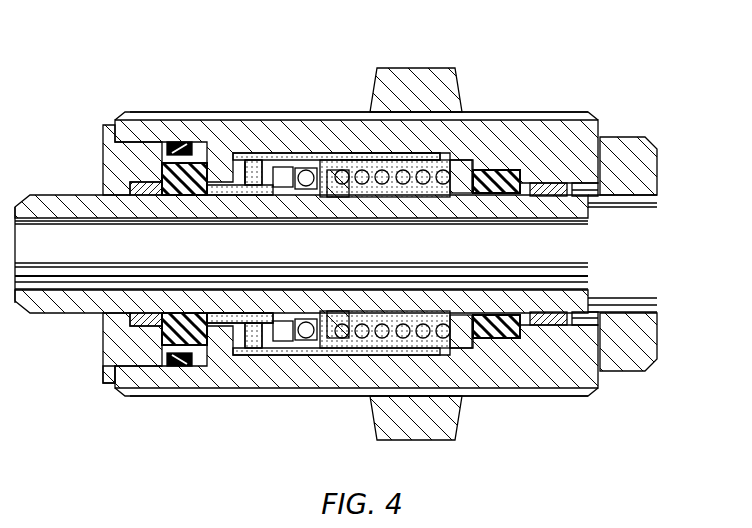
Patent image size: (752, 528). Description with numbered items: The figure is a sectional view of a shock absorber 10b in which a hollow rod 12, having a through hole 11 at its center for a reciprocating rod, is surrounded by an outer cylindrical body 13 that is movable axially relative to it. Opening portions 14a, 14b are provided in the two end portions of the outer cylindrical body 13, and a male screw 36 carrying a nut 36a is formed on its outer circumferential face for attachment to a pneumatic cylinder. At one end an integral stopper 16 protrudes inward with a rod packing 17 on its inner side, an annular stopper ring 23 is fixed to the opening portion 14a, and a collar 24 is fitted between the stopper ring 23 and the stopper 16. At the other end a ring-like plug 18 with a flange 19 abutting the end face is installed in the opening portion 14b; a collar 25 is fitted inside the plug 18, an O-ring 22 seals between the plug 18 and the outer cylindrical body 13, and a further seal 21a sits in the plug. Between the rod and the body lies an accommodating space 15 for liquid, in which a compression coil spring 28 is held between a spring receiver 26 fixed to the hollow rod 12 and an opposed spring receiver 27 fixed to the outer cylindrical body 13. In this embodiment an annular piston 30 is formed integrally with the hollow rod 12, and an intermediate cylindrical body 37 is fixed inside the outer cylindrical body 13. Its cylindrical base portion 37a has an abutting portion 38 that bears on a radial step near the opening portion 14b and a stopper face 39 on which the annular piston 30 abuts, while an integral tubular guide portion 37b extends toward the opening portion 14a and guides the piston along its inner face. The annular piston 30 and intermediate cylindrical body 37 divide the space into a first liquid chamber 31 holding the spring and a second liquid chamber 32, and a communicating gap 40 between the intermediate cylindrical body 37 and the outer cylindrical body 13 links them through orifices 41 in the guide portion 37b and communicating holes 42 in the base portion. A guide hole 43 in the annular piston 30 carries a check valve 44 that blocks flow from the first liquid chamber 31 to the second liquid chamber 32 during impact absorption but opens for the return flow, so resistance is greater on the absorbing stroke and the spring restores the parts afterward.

The shock absorber 10b is at (645, 62).
The through hole 11 is at (48, 222).
The hollow rod 12 is at (30, 302).
The outer cylindrical body 13 is at (553, 388).
The opening portion 14a is at (577, 324).
The opening portion 14b is at (142, 366).
The accommodating space 15 is at (407, 318).
The stopper 16 is at (530, 180).
The rod packing 17 is at (500, 170).
The plug 18 is at (143, 156).
The flange 19 is at (104, 125).
The seal member 21a is at (180, 197).
The O-ring 22 is at (176, 142).
The stopper ring 23 is at (637, 143).
The collar 24 is at (550, 183).
The collar 25 is at (130, 186).
The spring receiver 26 is at (330, 372).
The spring receiver 27 is at (470, 160).
The compression coil spring 28 is at (383, 188).
The annular piston 30 is at (293, 345).
The first liquid chamber 31 is at (410, 352).
The second liquid chamber 32 is at (250, 352).
The male screw 36 is at (543, 113).
The nut 36a is at (420, 78).
The intermediate cylindrical body 37 is at (375, 352).
The base portion 37a is at (222, 152).
The guide portion 37b is at (352, 155).
The abutting portion 38 is at (236, 353).
The stopper face 39 is at (275, 345).
The communicating gap 40 is at (256, 160).
The orifices 41 is at (345, 165).
The communicating holes 42 is at (247, 158).
The guide hole 43 is at (290, 168).
The check valve 44 is at (306, 170).